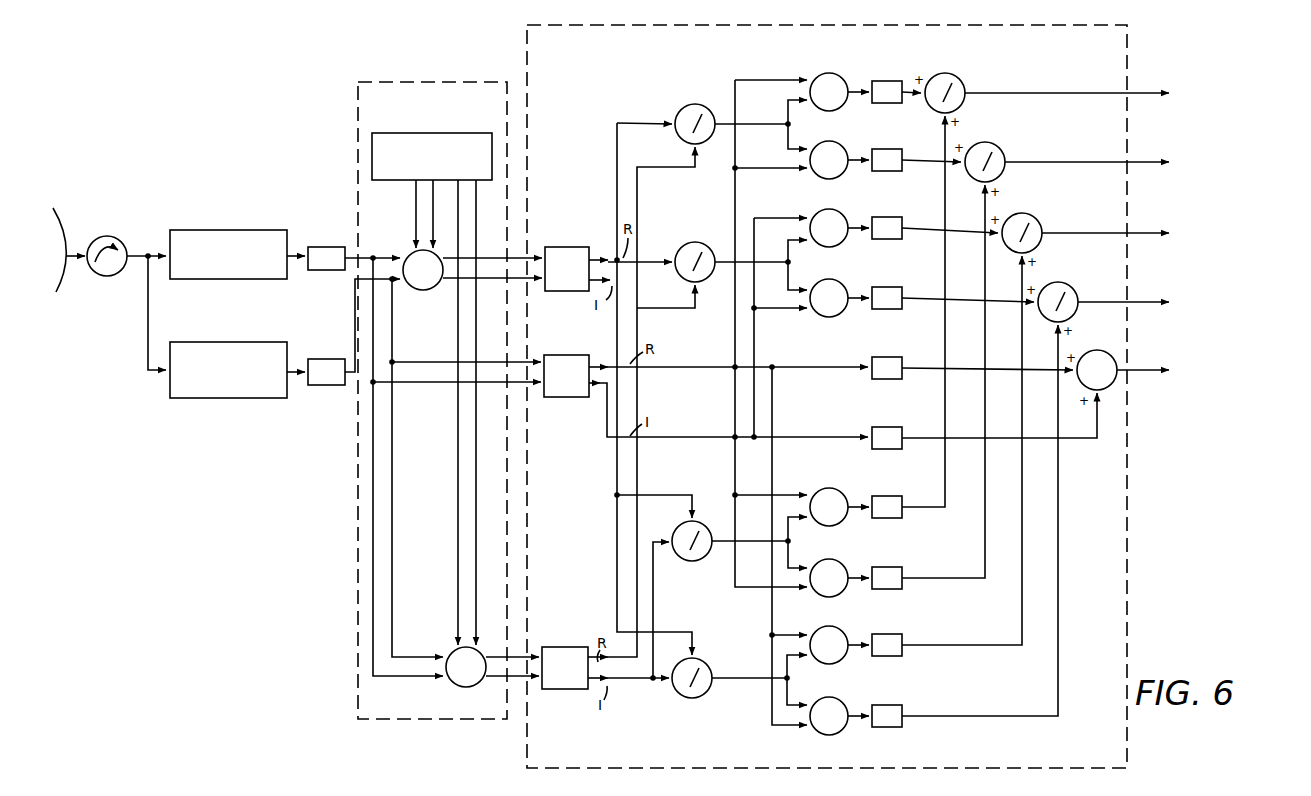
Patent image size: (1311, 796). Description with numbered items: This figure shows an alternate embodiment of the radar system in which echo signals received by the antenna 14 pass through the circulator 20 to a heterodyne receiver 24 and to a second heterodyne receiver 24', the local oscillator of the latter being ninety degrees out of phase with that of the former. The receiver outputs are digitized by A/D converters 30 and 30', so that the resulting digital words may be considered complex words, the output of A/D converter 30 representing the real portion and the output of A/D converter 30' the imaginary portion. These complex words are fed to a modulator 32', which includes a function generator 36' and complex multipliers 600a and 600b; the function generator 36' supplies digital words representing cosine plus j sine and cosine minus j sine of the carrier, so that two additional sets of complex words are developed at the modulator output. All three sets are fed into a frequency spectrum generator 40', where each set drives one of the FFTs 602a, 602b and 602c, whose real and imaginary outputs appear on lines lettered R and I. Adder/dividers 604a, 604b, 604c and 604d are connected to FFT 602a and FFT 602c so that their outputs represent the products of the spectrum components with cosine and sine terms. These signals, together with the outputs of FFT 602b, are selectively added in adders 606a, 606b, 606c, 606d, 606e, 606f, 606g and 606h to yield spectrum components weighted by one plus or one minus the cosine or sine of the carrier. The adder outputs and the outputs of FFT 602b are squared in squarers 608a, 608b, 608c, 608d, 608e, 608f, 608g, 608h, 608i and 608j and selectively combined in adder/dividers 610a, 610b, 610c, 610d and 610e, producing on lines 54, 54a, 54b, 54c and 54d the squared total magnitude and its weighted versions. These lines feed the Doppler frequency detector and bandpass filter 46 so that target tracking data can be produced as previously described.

The antenna 14 is at (69, 214).
The circulator 20 is at (118, 240).
The heterodyne receiver 24 is at (228, 241).
The heterodyne receiver 24' is at (228, 355).
The A/D converter 30 is at (325, 241).
The A/D converter 30' is at (325, 355).
The modulator 32' is at (432, 383).
The function generator 36' is at (432, 141).
The frequency spectrum generator 40' is at (827, 384).
The complex multiplier 600a is at (433, 288).
The complex multiplier 600b is at (452, 652).
The FFT 602a is at (581, 247).
The FFT 602b is at (580, 355).
The FFT 602c is at (578, 647).
The adder/divider 604a is at (706, 106).
The adder/divider 604b is at (705, 242).
The adder/divider 604c is at (700, 566).
The adder/divider 604d is at (704, 698).
The adder 606a is at (834, 74).
The adder 606b is at (840, 136).
The adder 606c is at (842, 203).
The adder 606d is at (840, 283).
The adder 606e is at (842, 482).
The adder 606f is at (838, 563).
The adder 606g is at (842, 620).
The adder 606h is at (842, 692).
The squarer 608a is at (898, 81).
The squarer 608b is at (900, 149).
The squarer 608c is at (900, 217).
The squarer 608d is at (900, 287).
The squarer 608e is at (902, 357).
The squarer 608f is at (900, 427).
The squarer 608g is at (900, 496).
The squarer 608h is at (900, 567).
The squarer 608i is at (900, 634).
The squarer 608j is at (900, 705).
The adder/divider 610a is at (962, 88).
The adder/divider 610b is at (1001, 152).
The adder/divider 610c is at (1037, 223).
The adder/divider 610d is at (1072, 290).
The adder/divider 610e is at (1106, 359).
The line 54 is at (1130, 370).
The line 54a is at (1128, 233).
The line 54b is at (1128, 302).
The line 54c is at (1128, 162).
The line 54d is at (1130, 93).
The Doppler frequency detector and bandpass filter 46 is at (1245, 236).